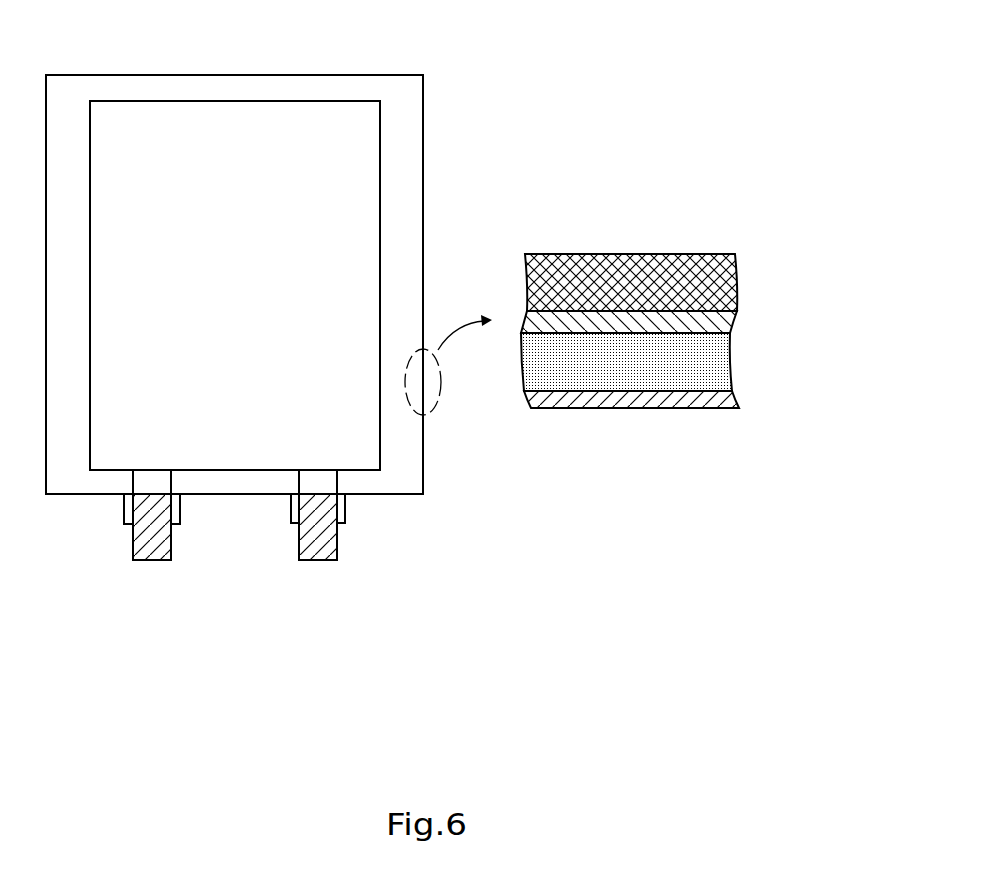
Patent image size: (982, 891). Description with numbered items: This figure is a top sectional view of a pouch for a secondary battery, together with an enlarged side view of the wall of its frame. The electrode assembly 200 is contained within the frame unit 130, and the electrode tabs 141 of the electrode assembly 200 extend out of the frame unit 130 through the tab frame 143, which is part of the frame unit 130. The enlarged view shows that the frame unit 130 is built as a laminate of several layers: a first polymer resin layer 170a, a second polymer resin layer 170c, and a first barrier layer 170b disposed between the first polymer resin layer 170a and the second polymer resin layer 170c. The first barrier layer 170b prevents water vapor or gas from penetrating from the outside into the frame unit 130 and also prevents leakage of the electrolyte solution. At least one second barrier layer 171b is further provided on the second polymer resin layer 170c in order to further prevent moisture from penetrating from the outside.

The frame unit 130 is at (425, 176).
The electrode assembly 200 is at (370, 268).
The electrode tabs 141 is at (340, 540).
The tab frame 143 is at (346, 507).
The first polymer resin layer 170a is at (737, 278).
The first barrier layer 170b is at (734, 318).
The second polymer resin layer 170c is at (729, 360).
The second barrier layer 171b is at (733, 398).